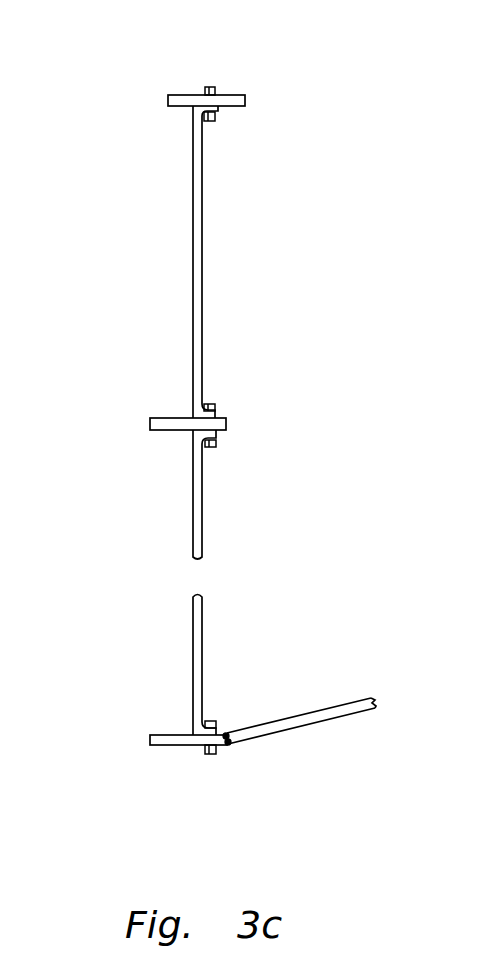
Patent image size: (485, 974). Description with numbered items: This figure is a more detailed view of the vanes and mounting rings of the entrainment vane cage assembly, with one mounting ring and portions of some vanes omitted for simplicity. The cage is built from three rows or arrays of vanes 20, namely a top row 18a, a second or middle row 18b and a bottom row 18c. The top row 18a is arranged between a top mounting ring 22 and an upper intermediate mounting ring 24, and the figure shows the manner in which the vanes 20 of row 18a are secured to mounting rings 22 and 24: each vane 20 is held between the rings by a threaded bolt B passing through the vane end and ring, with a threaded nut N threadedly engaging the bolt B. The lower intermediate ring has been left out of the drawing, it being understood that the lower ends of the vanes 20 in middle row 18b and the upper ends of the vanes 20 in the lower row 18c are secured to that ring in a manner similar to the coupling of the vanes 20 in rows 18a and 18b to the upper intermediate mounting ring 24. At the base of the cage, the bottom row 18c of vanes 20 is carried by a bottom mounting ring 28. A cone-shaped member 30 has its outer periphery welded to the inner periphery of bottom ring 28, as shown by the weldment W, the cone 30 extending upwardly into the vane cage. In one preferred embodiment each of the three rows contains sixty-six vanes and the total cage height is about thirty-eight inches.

The top row of vanes 18a is at (156, 179).
The second row of vanes 18b is at (141, 450).
The bottom row of vanes 18c is at (213, 705).
The vane 20 is at (186, 196).
The top mounting ring 22 is at (181, 90).
The upper intermediate mounting ring 24 is at (172, 408).
The bottom mounting ring 28 is at (166, 746).
The cone-shaped member 30 is at (328, 718).
The threaded nut N is at (218, 90).
The threaded bolt B is at (217, 113).
The weldment W is at (230, 746).